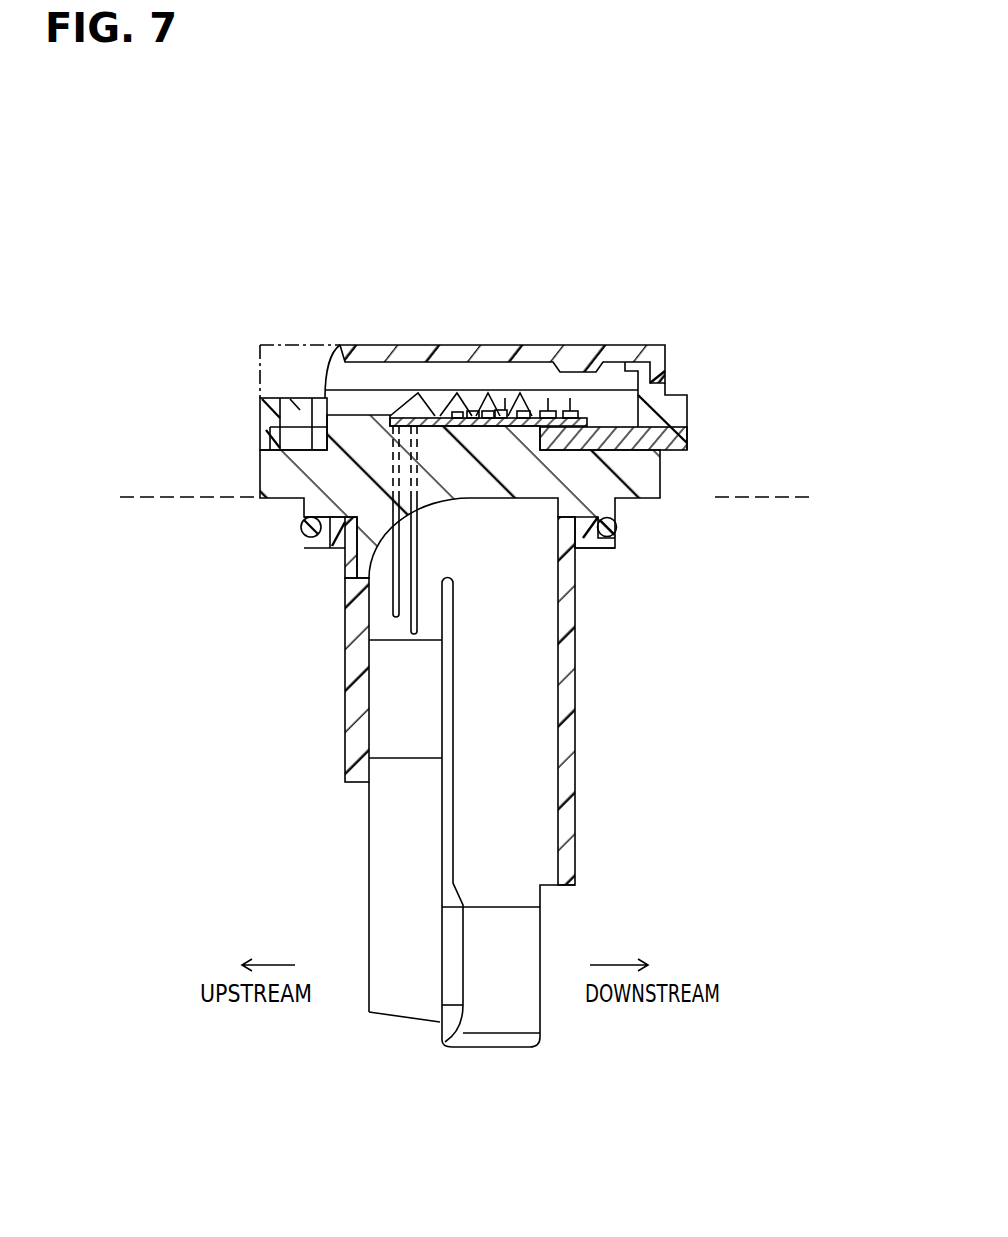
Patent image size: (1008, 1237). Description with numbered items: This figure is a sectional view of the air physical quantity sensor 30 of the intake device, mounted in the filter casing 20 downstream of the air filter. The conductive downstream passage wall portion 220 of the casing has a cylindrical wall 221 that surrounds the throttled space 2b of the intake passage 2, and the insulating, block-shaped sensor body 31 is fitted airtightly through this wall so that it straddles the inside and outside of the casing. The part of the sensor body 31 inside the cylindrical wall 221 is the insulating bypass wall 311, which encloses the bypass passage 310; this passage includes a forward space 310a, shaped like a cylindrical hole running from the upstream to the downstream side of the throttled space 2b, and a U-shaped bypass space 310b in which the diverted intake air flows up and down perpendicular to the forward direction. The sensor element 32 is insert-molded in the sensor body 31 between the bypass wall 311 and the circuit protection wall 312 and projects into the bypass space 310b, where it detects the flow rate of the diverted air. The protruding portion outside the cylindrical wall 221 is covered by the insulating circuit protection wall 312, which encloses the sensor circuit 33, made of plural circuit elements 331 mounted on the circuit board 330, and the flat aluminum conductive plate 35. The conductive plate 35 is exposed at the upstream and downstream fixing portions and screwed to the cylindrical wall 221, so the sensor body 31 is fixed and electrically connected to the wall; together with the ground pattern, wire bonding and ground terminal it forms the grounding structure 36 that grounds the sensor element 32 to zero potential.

The intake passage 2 is at (485, 645).
The throttled space 2b is at (826, 863).
The filter casing 20 is at (157, 497).
The downstream passage wall portion 220 is at (798, 475).
The cylindrical wall 221 is at (765, 497).
The air physical quantity sensor 30 is at (654, 342).
The sensor body 31 is at (533, 731).
The bypass wall 311 is at (575, 715).
The circuit protection wall 312 is at (640, 488).
The sensor element 32 is at (417, 627).
The sensor circuit 33 is at (488, 334).
The circuit board 330 is at (423, 413).
The circuit elements 331 is at (505, 410).
The conductive plate 35 is at (468, 405).
The grounding structure 36 is at (280, 440).
The bypass passage 310 is at (360, 810).
The forward space 310a is at (475, 920).
The bypass space 310b is at (369, 782).